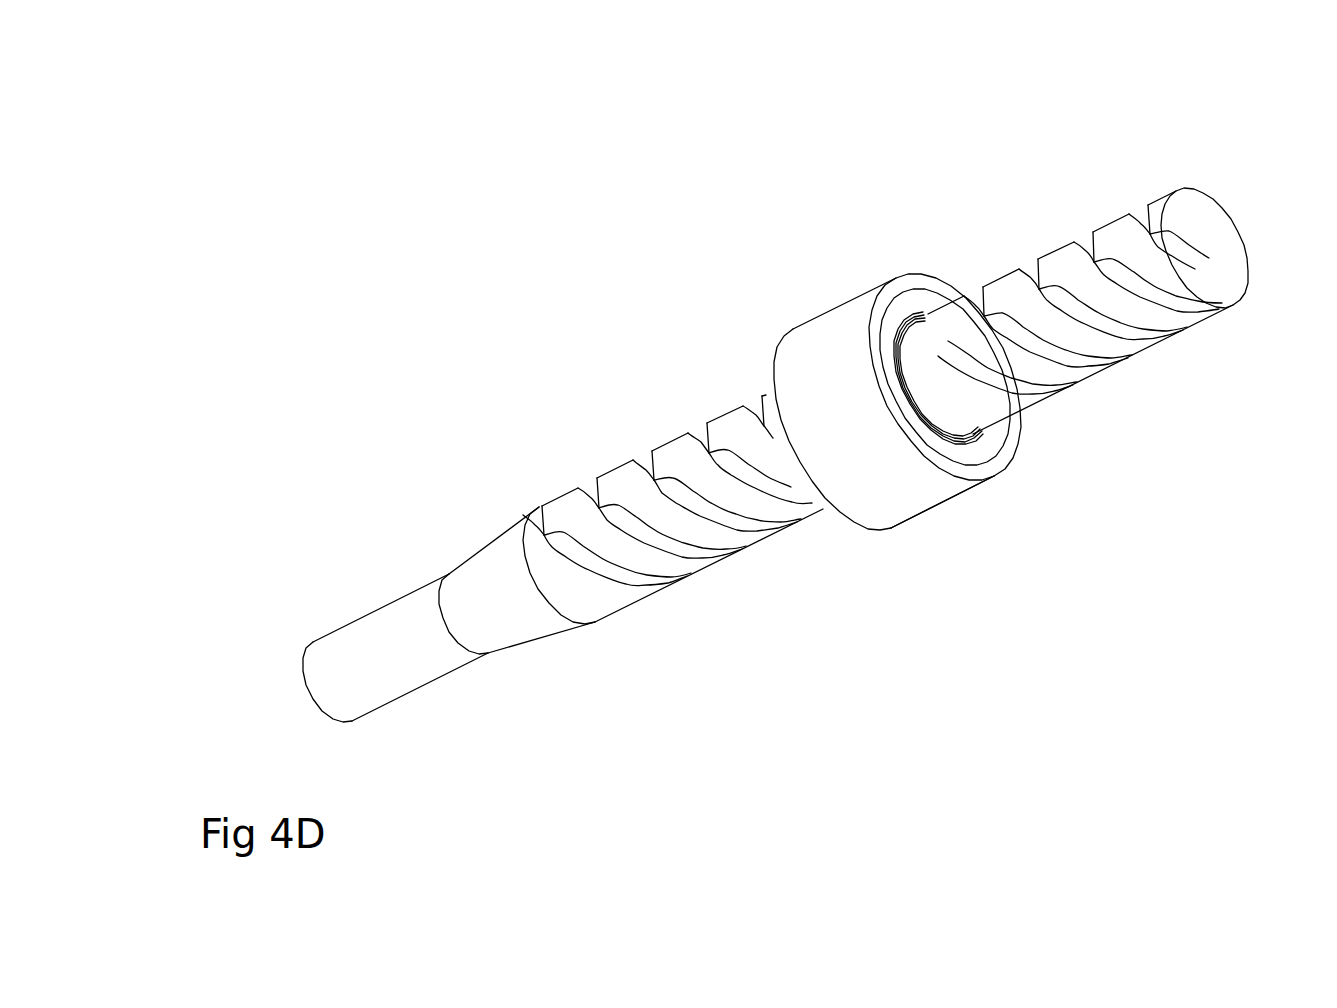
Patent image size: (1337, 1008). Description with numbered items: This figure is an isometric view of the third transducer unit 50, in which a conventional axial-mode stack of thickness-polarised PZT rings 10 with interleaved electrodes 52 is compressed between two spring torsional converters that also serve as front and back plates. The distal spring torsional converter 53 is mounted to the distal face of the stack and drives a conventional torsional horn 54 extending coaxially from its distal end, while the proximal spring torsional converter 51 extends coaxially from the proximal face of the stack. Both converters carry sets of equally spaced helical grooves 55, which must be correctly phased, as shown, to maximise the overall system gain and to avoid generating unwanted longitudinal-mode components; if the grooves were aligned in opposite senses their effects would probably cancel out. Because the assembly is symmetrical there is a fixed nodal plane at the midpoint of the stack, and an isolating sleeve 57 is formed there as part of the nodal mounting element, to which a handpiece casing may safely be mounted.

The thickness-polarised PZT ring 10 is at (968, 440).
The third transducer unit 50 is at (492, 432).
The proximal spring torsional converter 51 is at (1090, 345).
The interleaved electrode 52 is at (912, 313).
The distal spring torsional converter 53 is at (632, 598).
The torsional horn 54 is at (388, 655).
The helical grooves 55 is at (752, 405).
The isolating sleeve 57 is at (895, 495).